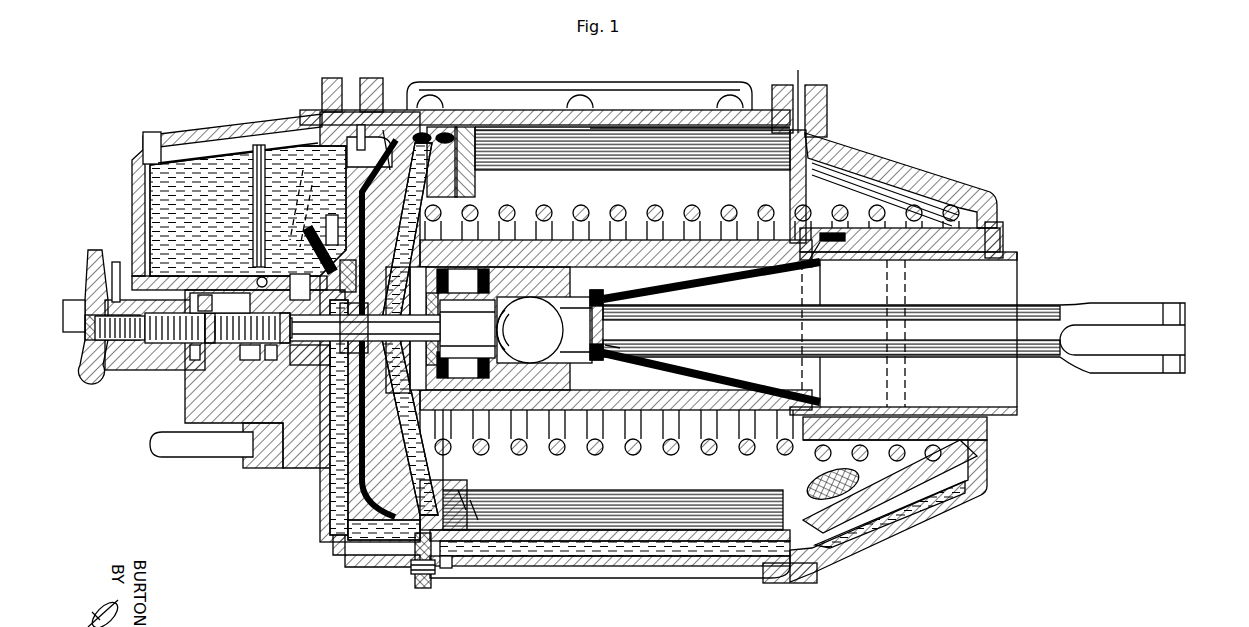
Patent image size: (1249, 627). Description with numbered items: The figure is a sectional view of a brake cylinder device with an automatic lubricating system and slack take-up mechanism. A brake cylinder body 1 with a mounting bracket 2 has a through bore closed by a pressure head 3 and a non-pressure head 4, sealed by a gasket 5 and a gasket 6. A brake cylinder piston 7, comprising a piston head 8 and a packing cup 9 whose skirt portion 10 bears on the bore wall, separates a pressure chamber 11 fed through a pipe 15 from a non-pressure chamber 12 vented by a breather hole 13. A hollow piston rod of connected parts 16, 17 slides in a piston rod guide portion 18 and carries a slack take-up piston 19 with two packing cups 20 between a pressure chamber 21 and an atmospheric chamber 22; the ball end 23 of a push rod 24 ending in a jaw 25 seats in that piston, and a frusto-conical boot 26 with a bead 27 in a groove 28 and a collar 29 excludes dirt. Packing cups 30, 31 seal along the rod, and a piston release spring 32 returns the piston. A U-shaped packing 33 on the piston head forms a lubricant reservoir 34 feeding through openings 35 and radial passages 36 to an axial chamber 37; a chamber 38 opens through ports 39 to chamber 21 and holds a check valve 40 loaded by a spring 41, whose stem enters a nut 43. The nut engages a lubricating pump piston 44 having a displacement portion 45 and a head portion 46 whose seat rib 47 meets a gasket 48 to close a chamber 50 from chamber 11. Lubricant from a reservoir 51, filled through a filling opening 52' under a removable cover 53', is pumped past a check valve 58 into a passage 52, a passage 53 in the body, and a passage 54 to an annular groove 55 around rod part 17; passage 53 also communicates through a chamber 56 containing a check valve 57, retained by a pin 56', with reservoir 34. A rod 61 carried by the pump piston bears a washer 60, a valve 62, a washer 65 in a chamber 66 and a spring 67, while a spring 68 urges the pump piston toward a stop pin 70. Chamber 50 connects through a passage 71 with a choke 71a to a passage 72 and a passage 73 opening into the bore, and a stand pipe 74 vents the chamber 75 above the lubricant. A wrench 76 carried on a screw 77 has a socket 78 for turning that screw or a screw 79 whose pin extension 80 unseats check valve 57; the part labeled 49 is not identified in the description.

The brake cylinder body 1 is at (668, 108).
The mounting bracket 2 is at (650, 82).
The pressure head 3 is at (330, 90).
The non-pressure head 4 is at (835, 140).
The gasket 5 is at (352, 110).
The gasket 6 is at (799, 95).
The brake cylinder piston 7 is at (392, 170).
The piston head 8 is at (462, 150).
The packing cup 9 is at (379, 328).
The skirt portion 10 is at (373, 110).
The pressure chamber 11 is at (360, 125).
The non-pressure chamber 12 is at (525, 135).
The breather hole 13 is at (838, 490).
The pipe 15 is at (190, 440).
The piston rod part 16 is at (738, 392).
The piston rod part 17 is at (875, 418).
The piston rod guide portion 18 is at (895, 207).
The slack take-up piston 19 is at (537, 412).
The packing cups 20 is at (449, 360).
The pressure chamber 21 is at (422, 382).
The chamber 22 is at (688, 425).
The ball end 23 is at (548, 348).
The brake cylinder push rod 24 is at (752, 328).
The jaw 25 is at (1190, 352).
The frusto-conical boot 26 is at (670, 362).
The annular bead 27 is at (616, 352).
The annular groove 28 is at (604, 325).
The annular collar 29 is at (800, 322).
The packing cup 30 is at (1005, 245).
The packing cup 31 is at (830, 232).
The piston release spring 32 is at (690, 207).
The U-shaped packing 33 is at (446, 133).
The lubricant reservoir 34 is at (423, 133).
The openings 35 is at (436, 160).
The radial passages 36 is at (400, 205).
The axial chamber 37 is at (385, 365).
The chamber 38 is at (414, 350).
The ports 39 is at (440, 306).
The check valve 40 is at (352, 268).
The spring 41 is at (444, 330).
The nut 43 is at (345, 305).
The lubricating pump piston 44 is at (300, 343).
The cylindrical displacement portion 45 is at (284, 345).
The head portion 46 is at (308, 365).
The annular seat rib 47 is at (273, 362).
The gasket 48 is at (252, 362).
The passage 49 is at (196, 362).
The chamber 50 is at (332, 246).
The reservoir 51 is at (134, 205).
The passage 52 is at (283, 428).
The filling opening 52' is at (232, 131).
The passage 53 is at (615, 580).
The removable cover 53' is at (238, 130).
The passage 54 is at (905, 520).
The annular groove 55 is at (912, 410).
The chamber 56 is at (493, 489).
The pin 56' is at (477, 484).
The check valve 57 is at (444, 568).
The check valve 58 is at (160, 372).
The washer 60 is at (170, 345).
The rod 61 is at (198, 296).
The valve 62 is at (287, 318).
The washer 65 is at (256, 283).
The chamber 66 is at (240, 345).
The spring 67 is at (258, 345).
The spring 68 is at (200, 345).
The stop pin 70 is at (330, 215).
The passage 71 is at (290, 245).
The choke 71a is at (304, 245).
The passage 72 is at (322, 118).
The passage 73 is at (503, 118).
The pipe 74 is at (252, 210).
The chamber 75 is at (252, 160).
The wrench 76 is at (90, 256).
The screw 77 is at (115, 300).
The socket 78 is at (70, 318).
The screw 79 is at (420, 582).
The pin extension 80 is at (412, 568).